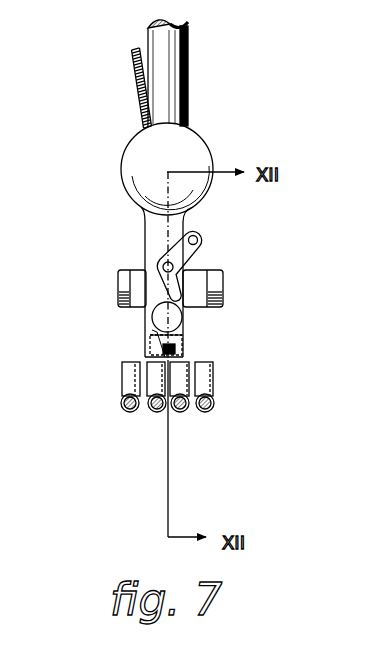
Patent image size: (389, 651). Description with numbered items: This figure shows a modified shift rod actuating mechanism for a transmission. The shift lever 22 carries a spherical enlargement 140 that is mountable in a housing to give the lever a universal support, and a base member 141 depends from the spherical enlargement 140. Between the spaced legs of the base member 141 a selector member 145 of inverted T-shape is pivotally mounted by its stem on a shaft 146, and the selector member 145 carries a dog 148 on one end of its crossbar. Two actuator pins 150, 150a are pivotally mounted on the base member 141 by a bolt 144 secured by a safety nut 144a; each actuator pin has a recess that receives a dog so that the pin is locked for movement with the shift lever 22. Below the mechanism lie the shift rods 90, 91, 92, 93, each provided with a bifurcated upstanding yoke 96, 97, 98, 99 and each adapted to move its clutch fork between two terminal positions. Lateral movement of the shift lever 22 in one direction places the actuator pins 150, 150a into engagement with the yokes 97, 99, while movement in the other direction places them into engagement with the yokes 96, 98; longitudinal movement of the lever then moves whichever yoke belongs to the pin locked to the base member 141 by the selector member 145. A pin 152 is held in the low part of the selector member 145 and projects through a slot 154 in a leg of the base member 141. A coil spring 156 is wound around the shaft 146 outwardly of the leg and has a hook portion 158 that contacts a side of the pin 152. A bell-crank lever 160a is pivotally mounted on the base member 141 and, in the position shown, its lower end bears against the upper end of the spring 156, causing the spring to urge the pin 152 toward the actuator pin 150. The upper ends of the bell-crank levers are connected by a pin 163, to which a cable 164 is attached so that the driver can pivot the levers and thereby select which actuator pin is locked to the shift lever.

The shift lever 22 is at (186, 57).
The cable 164 is at (133, 86).
The spherical enlargement 140 is at (170, 143).
The base member 141 is at (183, 237).
The pin 163 is at (199, 238).
The bell-crank lever 160a is at (173, 256).
The bolt 144 is at (122, 289).
The safety nut 144a is at (214, 289).
The shaft 146 is at (160, 318).
The coil spring 156 is at (167, 330).
The selector member 145 is at (172, 335).
The slot 154 is at (182, 345).
The dog 148 is at (177, 349).
The actuator pin 150 is at (134, 363).
The actuator pin 150a is at (200, 362).
The yoke 97 is at (127, 371).
The yoke 98 is at (213, 385).
The shift rod 91 is at (125, 406).
The shift rod 90 is at (155, 409).
The pin 152 is at (175, 396).
The shift rod 92 is at (208, 412).
The hook portion 158 is at (212, 402).
The yoke 96 is at (162, 363).
The shift rod 93 is at (184, 408).
The yoke 99 is at (176, 366).